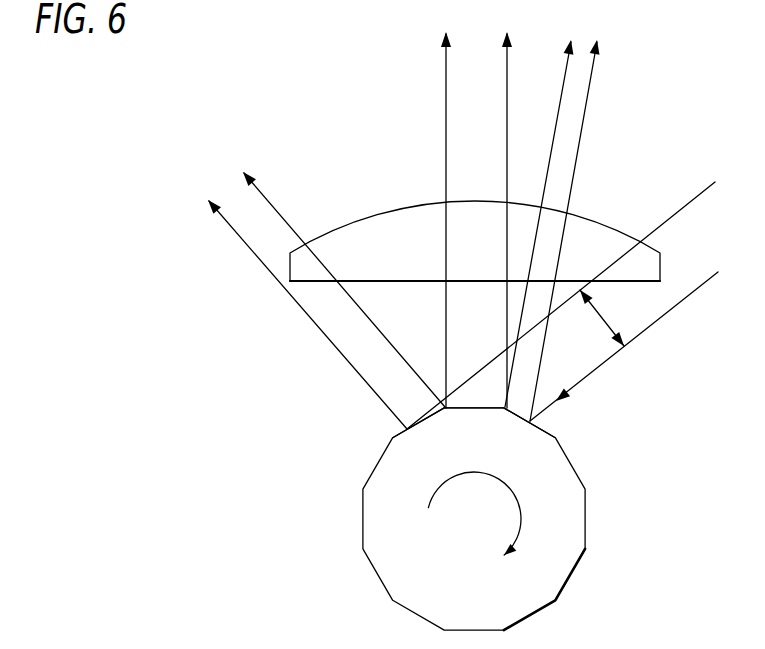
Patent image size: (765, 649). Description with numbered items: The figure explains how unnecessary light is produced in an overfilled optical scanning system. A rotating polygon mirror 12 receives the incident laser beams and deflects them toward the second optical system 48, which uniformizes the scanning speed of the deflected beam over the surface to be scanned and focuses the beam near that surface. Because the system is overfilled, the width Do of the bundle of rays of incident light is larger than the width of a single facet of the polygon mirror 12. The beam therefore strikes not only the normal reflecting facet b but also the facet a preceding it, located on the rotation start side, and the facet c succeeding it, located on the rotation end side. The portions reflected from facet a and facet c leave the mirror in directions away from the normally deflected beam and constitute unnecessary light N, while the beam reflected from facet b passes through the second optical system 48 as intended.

The polygon mirror 12 is at (586, 518).
The second optical system 48 is at (604, 226).
The facet a is at (421, 407).
The normal reflecting facet b is at (482, 408).
The facet c is at (548, 431).
The unnecessary light N is at (240, 165).
The width of the bundle of rays of incident light Do is at (612, 328).